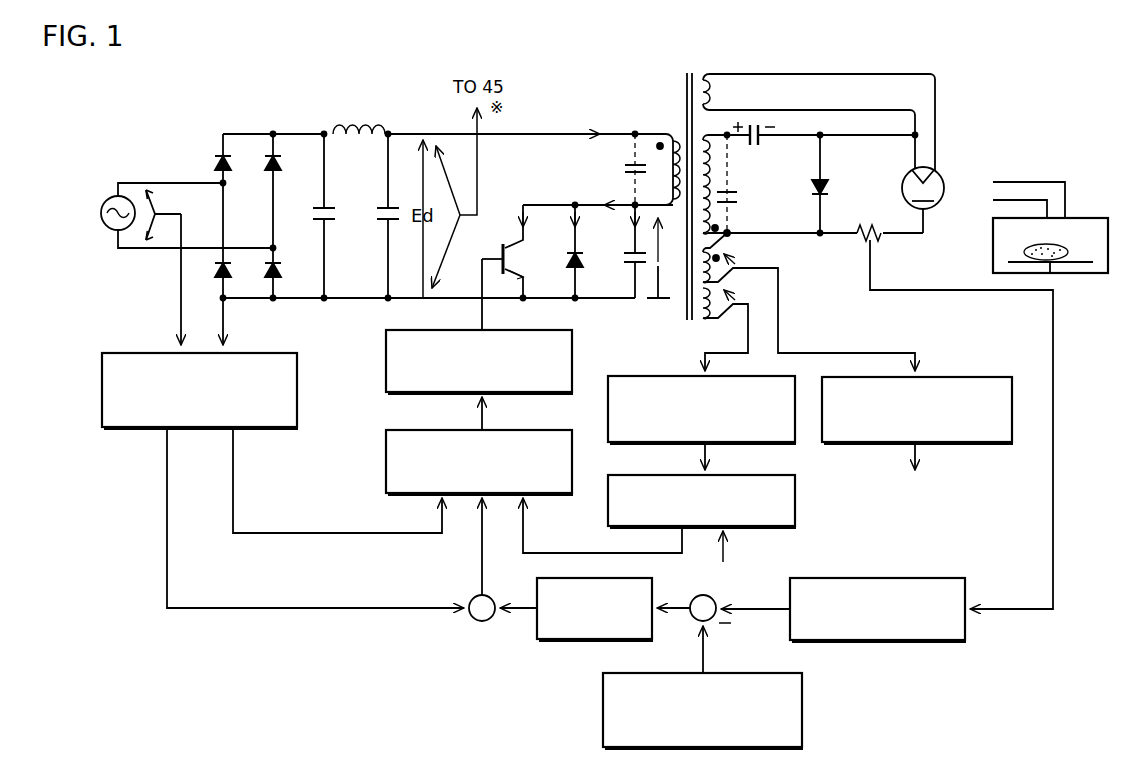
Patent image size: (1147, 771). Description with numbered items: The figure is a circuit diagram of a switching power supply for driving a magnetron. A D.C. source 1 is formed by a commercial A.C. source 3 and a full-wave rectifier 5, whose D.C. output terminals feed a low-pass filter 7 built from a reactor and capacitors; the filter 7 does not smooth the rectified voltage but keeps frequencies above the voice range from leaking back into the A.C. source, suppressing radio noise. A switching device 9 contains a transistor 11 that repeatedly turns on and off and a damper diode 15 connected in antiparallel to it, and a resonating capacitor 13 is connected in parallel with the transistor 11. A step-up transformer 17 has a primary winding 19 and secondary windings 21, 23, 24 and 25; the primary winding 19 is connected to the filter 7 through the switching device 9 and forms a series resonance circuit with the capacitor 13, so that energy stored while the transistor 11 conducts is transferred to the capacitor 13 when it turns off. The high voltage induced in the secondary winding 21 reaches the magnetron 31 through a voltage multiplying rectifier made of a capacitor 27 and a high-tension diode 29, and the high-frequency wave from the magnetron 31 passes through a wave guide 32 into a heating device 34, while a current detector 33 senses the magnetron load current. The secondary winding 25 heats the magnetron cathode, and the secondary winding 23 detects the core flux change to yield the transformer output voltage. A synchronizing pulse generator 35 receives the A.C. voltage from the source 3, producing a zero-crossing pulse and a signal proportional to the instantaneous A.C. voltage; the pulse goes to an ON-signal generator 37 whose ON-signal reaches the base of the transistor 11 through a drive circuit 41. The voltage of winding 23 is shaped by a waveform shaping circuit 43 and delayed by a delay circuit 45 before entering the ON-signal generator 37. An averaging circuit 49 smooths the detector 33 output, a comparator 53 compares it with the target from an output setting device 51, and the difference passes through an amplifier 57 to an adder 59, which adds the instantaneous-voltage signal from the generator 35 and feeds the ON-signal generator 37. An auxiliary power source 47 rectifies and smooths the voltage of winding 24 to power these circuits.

The D.C. source 1 is at (178, 123).
The commercial A.C. source 3 is at (101, 203).
The full-wave rectifier 5 is at (257, 218).
The low-pass filter 7 is at (363, 221).
The switching device 9 is at (556, 178).
The transistor 11 is at (520, 244).
The resonating capacitor 13 is at (633, 262).
The damper diode 15 is at (572, 262).
The step-up transformer 17 is at (660, 58).
The primary winding 19 is at (671, 133).
The secondary winding 21 is at (733, 185).
The secondary winding 23 is at (710, 322).
The secondary winding 24 is at (731, 234).
The secondary winding 25 is at (712, 74).
The capacitor 27 is at (758, 146).
The high-tension diode 29 is at (828, 186).
The magnetron 31 is at (943, 183).
The wave guide 32 is at (1022, 181).
The current detector 33 is at (885, 242).
The heating device 34 is at (1082, 217).
The synchronizing pulse generator 35 is at (101, 392).
The ON-signal generator 37 is at (385, 467).
The drive circuit 41 is at (385, 352).
The waveform shaping circuit 43 is at (640, 375).
The delay circuit 45 is at (797, 503).
The auxiliary power source 47 is at (966, 376).
The averaging circuit 49 is at (926, 577).
The output setting device 51 is at (802, 712).
The comparator 53 is at (696, 597).
The amplifier 57 is at (560, 640).
The adder 59 is at (485, 622).